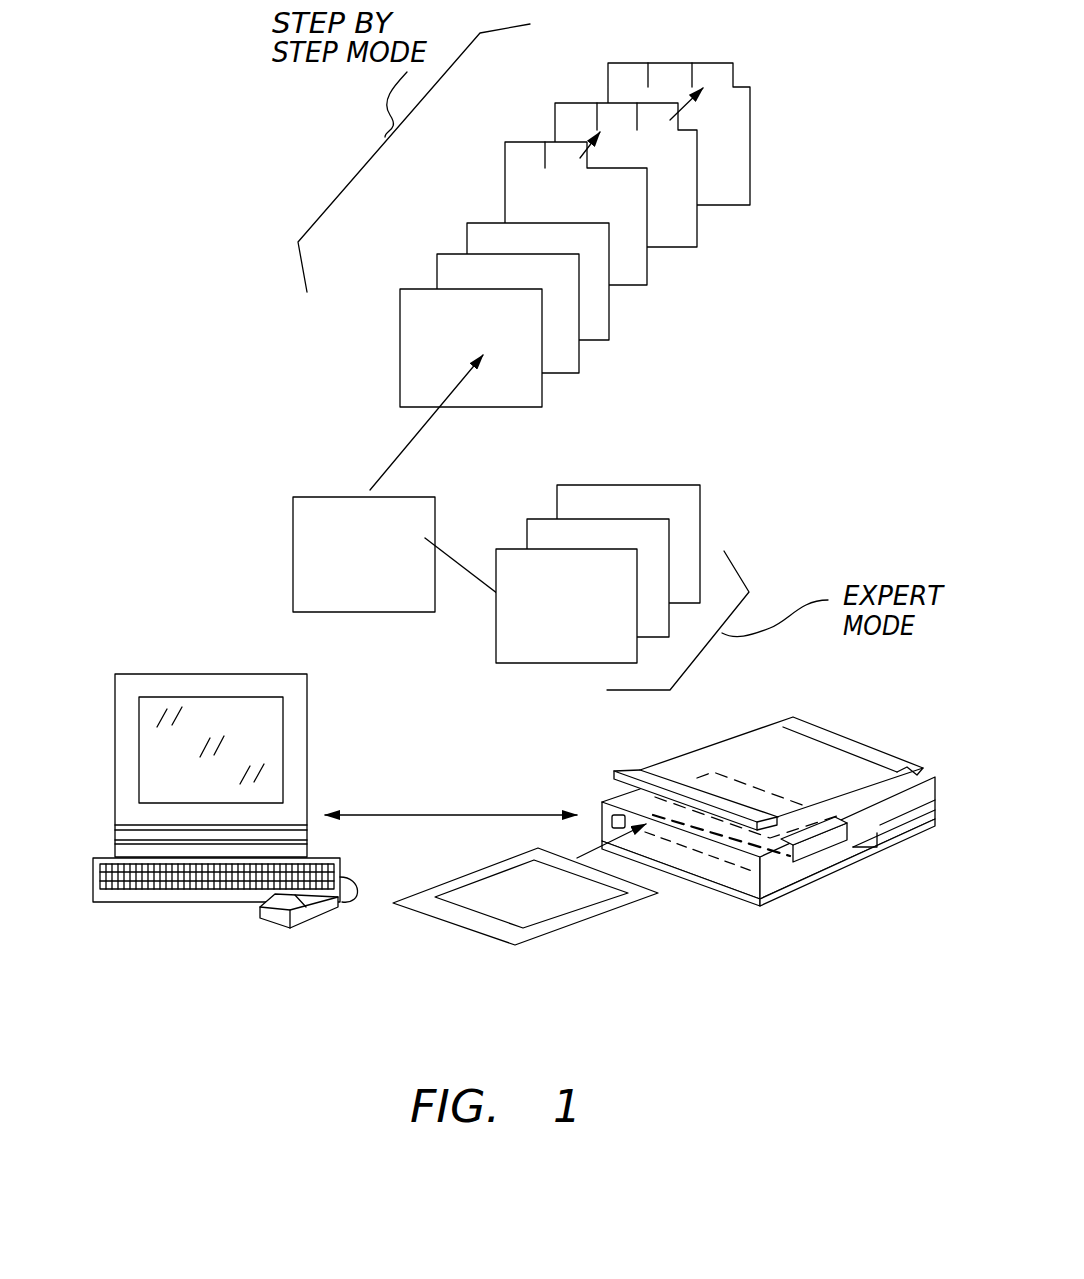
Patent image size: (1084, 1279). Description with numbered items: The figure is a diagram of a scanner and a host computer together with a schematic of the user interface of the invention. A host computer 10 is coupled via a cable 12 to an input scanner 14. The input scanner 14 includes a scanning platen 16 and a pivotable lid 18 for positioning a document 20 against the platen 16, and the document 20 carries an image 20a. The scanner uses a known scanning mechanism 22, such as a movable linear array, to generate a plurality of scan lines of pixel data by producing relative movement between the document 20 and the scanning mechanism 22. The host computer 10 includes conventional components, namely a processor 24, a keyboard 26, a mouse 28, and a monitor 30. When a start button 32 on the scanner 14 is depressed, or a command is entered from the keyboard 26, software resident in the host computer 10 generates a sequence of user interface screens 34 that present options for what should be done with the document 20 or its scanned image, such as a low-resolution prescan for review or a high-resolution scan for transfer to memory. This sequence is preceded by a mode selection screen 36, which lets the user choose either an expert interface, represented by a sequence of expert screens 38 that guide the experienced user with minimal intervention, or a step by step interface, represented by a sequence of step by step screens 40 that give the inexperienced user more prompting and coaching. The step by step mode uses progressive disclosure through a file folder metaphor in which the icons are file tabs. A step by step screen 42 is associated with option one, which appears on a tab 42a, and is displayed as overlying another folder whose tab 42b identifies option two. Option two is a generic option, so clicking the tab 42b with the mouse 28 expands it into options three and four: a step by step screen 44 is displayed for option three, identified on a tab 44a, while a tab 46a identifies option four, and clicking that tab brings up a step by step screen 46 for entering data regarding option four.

The host computer 10 is at (207, 518).
The cable 12 is at (460, 812).
The input scanner 14 is at (750, 812).
The scanning platen 16 is at (850, 807).
The pivotable lid 18 is at (728, 762).
The document 20 is at (543, 901).
The image 20a is at (480, 913).
The scanning mechanism 22 is at (797, 852).
The processor 24 is at (132, 773).
The keyboard 26 is at (162, 897).
The mouse 28 is at (323, 915).
The monitor 30 is at (198, 677).
The start button 32 is at (602, 813).
The user interface screens 34 is at (822, 370).
The mode selection screen 36 is at (325, 497).
The expert screens 38 is at (518, 517).
The step by step screens 40 is at (377, 313).
The step by step screen 42 is at (583, 217).
The tab 42a is at (505, 160).
The tab 42b is at (583, 165).
The step by step screen 44 is at (667, 151).
The tab 44a is at (600, 112).
The step by step screen 46 is at (740, 120).
The tab 46a is at (720, 173).